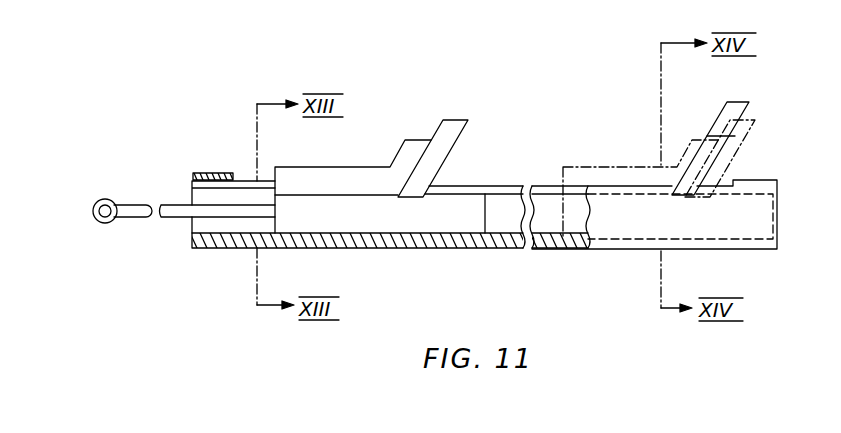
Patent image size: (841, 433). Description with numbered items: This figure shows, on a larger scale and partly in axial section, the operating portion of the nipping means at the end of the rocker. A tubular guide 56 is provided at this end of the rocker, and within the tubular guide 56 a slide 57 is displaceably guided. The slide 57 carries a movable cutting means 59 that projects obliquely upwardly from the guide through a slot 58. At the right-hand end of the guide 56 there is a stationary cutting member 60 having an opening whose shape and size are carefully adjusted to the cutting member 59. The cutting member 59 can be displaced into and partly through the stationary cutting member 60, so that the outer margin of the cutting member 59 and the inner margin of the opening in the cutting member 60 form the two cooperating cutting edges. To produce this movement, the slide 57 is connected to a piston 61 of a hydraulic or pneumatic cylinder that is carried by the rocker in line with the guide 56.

The tubular guide 56 is at (407, 244).
The slide 57 is at (475, 198).
The slot 58 is at (515, 188).
The movable cutting means 59 is at (447, 150).
The stationary cutting member 60 is at (743, 107).
The piston 61 is at (176, 212).